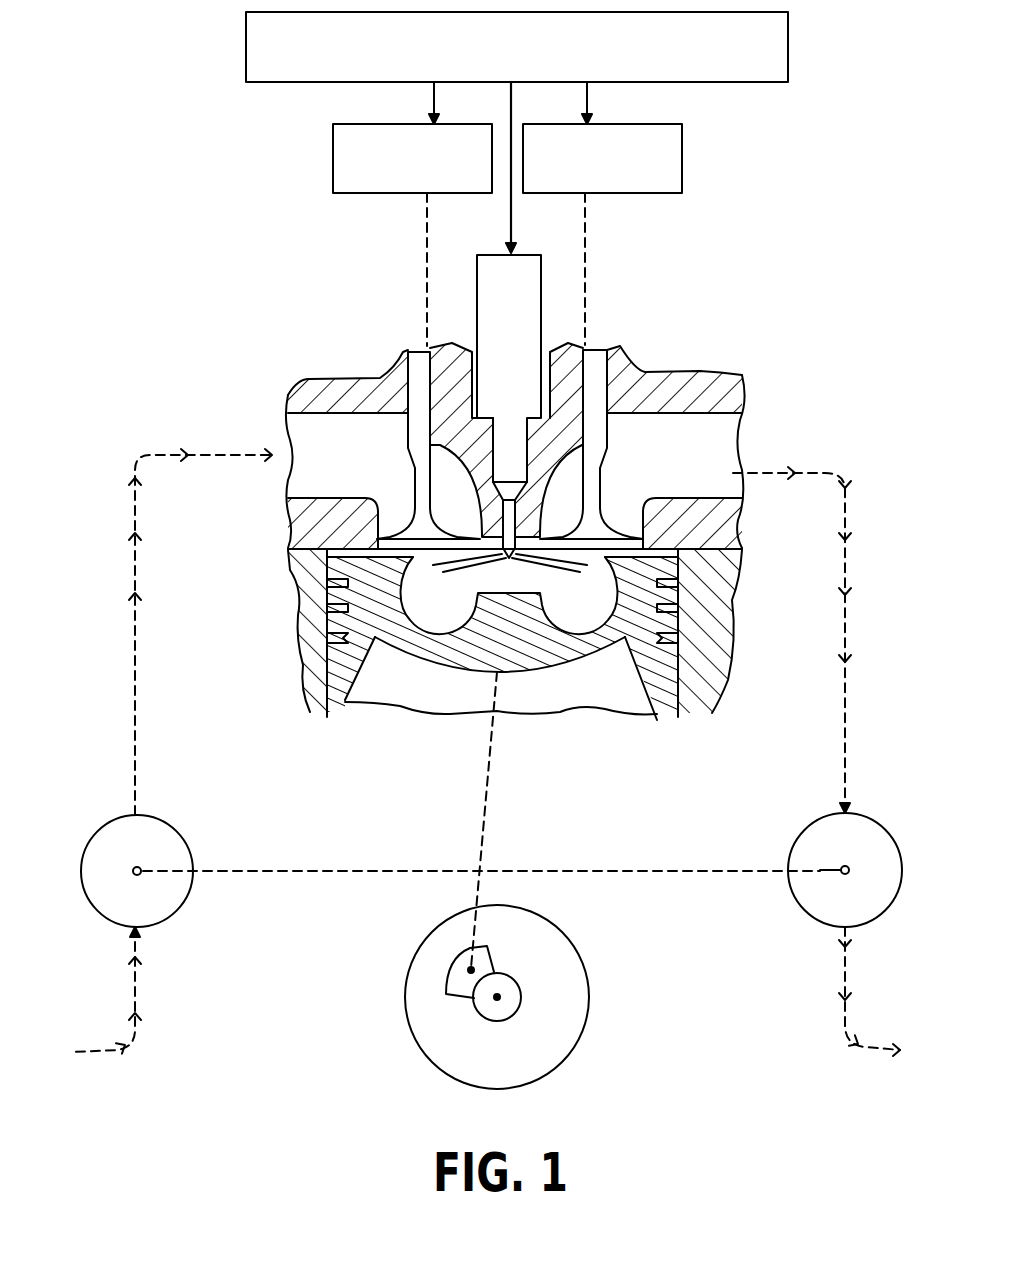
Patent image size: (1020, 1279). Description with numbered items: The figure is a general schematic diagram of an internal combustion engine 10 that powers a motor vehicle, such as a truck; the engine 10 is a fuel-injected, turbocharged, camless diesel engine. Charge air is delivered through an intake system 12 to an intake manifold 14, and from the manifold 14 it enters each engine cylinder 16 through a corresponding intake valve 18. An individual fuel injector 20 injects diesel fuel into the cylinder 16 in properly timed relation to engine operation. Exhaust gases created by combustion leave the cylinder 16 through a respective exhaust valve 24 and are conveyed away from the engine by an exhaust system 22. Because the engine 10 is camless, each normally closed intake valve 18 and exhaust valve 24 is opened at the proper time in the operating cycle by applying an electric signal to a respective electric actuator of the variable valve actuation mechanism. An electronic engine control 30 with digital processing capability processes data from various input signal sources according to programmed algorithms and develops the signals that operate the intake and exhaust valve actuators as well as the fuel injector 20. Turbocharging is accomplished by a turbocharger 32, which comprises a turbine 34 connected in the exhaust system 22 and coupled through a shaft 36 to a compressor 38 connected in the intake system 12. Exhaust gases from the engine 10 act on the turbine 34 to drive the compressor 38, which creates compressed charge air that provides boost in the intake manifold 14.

The internal combustion engine 10 is at (460, 516).
The intake system 12 is at (200, 609).
The intake manifold 14 is at (312, 443).
The engine cylinder 16 is at (327, 683).
The intake valve 18 is at (428, 378).
The fuel injector 20 is at (477, 275).
The exhaust system 22 is at (792, 594).
The exhaust valve 24 is at (592, 378).
The electronic engine control 30 is at (246, 82).
The turbocharger 32 is at (862, 834).
The turbine 34 is at (805, 909).
The shaft 36 is at (643, 869).
The compressor 38 is at (167, 822).